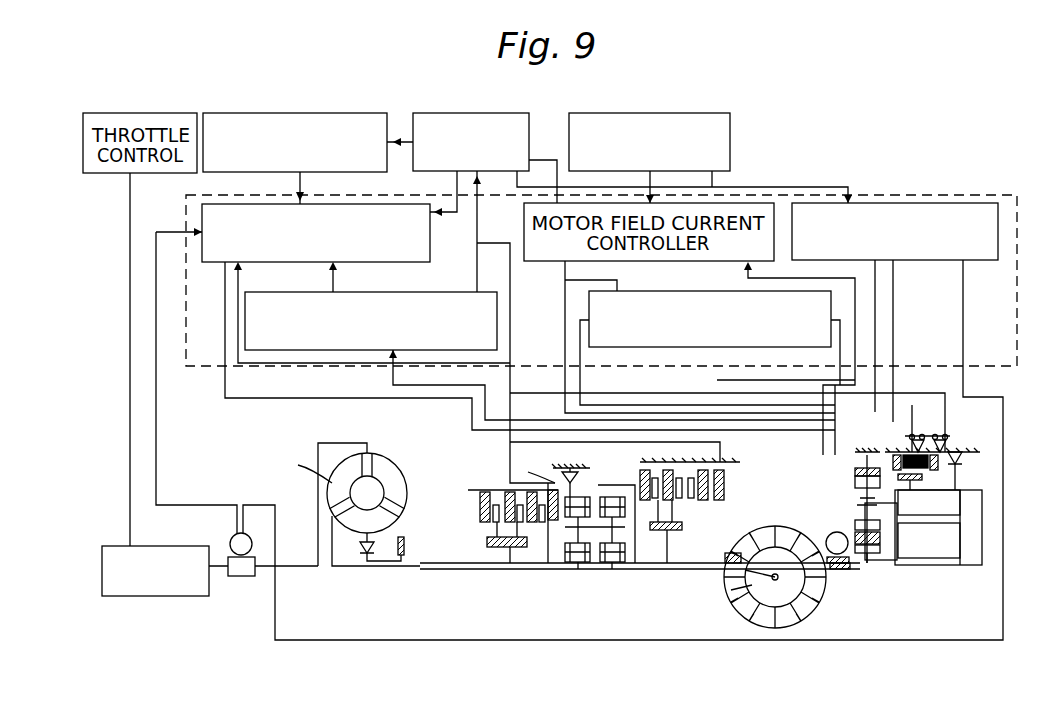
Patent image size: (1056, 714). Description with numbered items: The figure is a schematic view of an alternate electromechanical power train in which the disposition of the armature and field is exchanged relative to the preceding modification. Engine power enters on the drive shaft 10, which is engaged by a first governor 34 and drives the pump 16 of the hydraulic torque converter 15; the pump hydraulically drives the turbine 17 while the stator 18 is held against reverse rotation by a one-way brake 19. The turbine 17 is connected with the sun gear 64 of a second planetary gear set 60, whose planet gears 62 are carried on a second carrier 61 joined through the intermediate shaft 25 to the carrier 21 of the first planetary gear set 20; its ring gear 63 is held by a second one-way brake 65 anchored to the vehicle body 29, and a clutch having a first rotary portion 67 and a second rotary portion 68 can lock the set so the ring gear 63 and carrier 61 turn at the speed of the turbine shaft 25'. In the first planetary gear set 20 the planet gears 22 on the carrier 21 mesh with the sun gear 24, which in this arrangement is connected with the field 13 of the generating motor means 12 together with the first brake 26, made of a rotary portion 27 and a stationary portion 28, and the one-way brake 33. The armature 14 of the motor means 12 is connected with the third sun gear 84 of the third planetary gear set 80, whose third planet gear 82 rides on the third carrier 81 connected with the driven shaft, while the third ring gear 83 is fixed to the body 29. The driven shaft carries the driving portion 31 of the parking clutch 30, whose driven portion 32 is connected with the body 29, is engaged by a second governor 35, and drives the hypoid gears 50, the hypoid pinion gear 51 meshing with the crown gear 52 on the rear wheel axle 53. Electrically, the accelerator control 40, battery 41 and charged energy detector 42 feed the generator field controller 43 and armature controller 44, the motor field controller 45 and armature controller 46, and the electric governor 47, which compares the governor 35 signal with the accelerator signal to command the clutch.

The drive shaft 10 is at (218, 572).
The generating motor means 12 is at (942, 547).
The field element 13 is at (955, 498).
The armature 14 is at (938, 565).
The hydraulic torque converter 15 is at (354, 525).
The pump 16 is at (391, 480).
The turbine 17 is at (301, 470).
The stator 18 is at (384, 531).
The one-way brake 19 is at (356, 548).
The planetary gear set 20 is at (606, 566).
The carrier 21 is at (618, 531).
The planet gears 22 is at (612, 500).
The sun gear 24 is at (634, 562).
The intermediate shaft 25 is at (621, 468).
The turbine shaft 25' is at (640, 589).
The first brake 26 is at (672, 555).
The rotary portion 27 is at (683, 526).
The stationary portion 28 is at (667, 482).
The body 29 is at (868, 450).
The second clutch 30 is at (883, 493).
The driving portion 31 is at (944, 478).
The driven portion 32 is at (926, 425).
The one-way brake 33 is at (940, 462).
The first governor 34 is at (233, 541).
The second governor 35 is at (836, 532).
The accelerator control 40 is at (620, 112).
The battery 41 is at (433, 112).
The charged energy detector 42 is at (300, 97).
The field controller 43 is at (216, 263).
The armature controller 44 is at (422, 291).
The field controller 45 is at (768, 193).
The armature controller 46 is at (645, 290).
The electric governor 47 is at (913, 261).
The hypoid gears 50 is at (771, 603).
The hypoid pinion gear 51 is at (726, 555).
The crown gear 52 is at (742, 622).
The rear wheel axle 53 is at (812, 590).
The second planetary gear set 60 is at (603, 547).
The second carrier 61 is at (576, 540).
The planet gears 62 is at (580, 511).
The ring gear 63 is at (583, 480).
The sun gear 64 is at (576, 557).
The second one-way brake 65 is at (533, 465).
The first rotary portion 67 is at (487, 540).
The second rotary portion 68 is at (498, 495).
The third planetary gear set 80 is at (880, 560).
The third carrier 81 is at (855, 501).
The third planet gear 82 is at (855, 490).
The third ring gear 83 is at (855, 463).
The third sun gear 84 is at (860, 562).